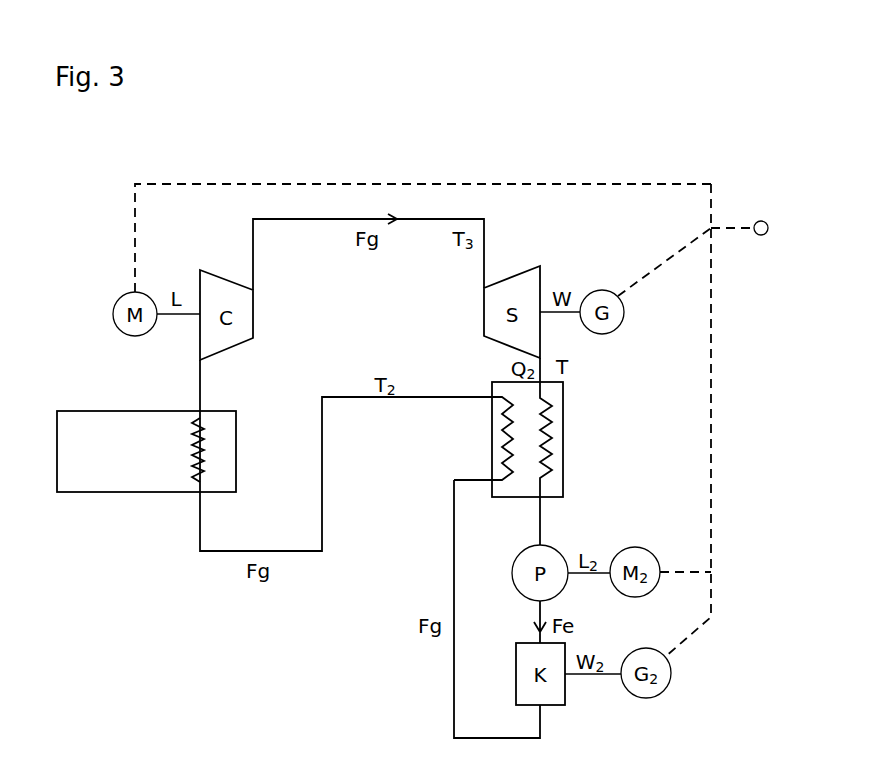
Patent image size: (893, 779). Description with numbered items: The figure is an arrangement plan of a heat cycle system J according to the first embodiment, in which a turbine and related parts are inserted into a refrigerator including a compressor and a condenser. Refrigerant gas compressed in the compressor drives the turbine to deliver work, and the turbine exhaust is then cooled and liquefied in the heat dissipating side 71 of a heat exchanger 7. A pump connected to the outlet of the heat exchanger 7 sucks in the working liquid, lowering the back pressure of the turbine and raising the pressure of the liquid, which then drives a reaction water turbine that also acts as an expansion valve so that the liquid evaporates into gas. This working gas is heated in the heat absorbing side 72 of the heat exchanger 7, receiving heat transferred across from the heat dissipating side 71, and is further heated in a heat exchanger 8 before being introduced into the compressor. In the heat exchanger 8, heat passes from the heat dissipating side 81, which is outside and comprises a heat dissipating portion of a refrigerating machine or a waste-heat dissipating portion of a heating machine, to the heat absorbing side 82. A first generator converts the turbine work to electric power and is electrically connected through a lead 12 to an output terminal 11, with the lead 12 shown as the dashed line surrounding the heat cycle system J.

The heat exchanger 7 is at (535, 457).
The heat dissipating side 71 is at (552, 442).
The heat absorbing side 72 is at (512, 480).
The heat exchanger 8 is at (174, 449).
The heat dissipating side 81 is at (146, 451).
The heat absorbing side 82 is at (200, 432).
The output terminal 11 is at (760, 235).
The lead 12 is at (711, 386).
The heat cycle system J is at (486, 164).